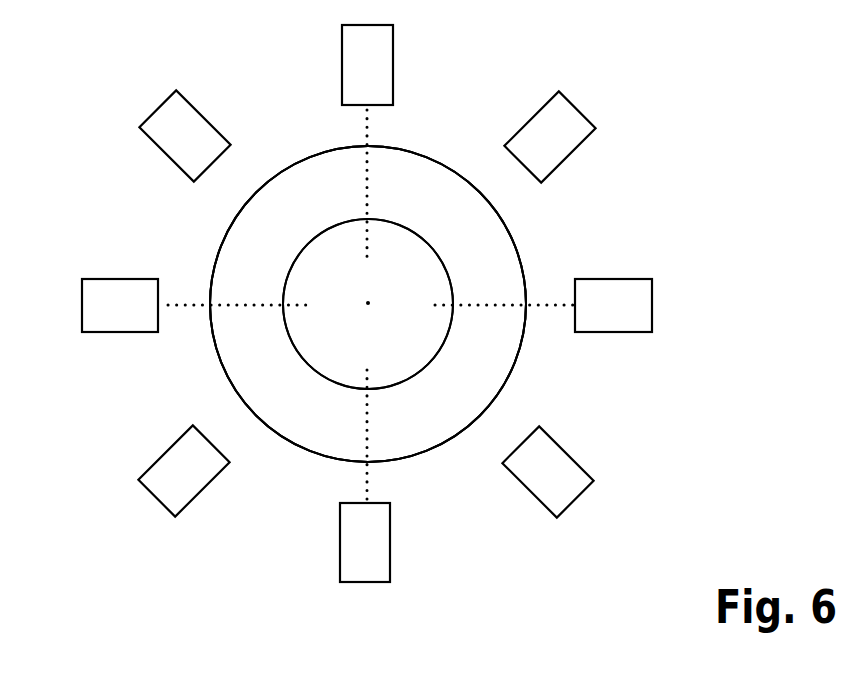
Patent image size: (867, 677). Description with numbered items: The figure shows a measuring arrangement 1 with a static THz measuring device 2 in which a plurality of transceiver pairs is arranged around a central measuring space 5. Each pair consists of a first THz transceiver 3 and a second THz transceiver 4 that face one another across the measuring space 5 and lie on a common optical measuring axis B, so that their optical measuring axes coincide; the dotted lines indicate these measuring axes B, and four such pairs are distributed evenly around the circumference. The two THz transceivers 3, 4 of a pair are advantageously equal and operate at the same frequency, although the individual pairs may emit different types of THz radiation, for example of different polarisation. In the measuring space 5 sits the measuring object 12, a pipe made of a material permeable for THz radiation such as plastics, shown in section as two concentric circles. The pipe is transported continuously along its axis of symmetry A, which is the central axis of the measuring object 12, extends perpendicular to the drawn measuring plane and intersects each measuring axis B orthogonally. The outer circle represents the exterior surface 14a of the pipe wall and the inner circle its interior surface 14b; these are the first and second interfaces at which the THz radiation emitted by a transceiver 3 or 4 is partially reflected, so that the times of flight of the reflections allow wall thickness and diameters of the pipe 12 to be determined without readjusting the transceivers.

The measuring arrangement 1 is at (722, 102).
The THz measuring device 2 is at (510, 563).
The first THz transceiver 3 is at (388, 40).
The second THz transceiver 4 is at (565, 117).
The measuring space 5 is at (527, 230).
The measuring object 12 is at (282, 192).
The exterior surface 14a is at (209, 366).
The interior surface 14b is at (398, 237).
The axis of symmetry A is at (368, 303).
The measuring axis B is at (367, 121).